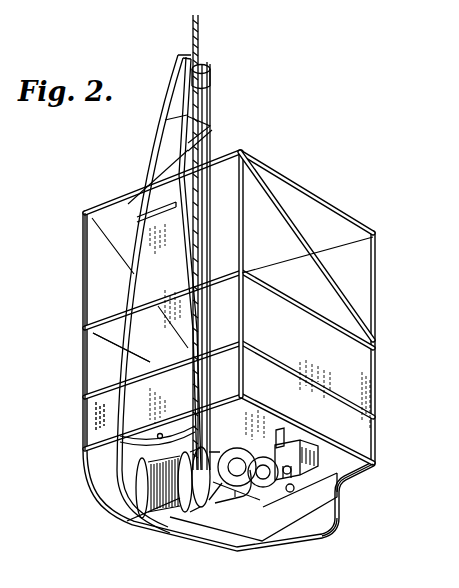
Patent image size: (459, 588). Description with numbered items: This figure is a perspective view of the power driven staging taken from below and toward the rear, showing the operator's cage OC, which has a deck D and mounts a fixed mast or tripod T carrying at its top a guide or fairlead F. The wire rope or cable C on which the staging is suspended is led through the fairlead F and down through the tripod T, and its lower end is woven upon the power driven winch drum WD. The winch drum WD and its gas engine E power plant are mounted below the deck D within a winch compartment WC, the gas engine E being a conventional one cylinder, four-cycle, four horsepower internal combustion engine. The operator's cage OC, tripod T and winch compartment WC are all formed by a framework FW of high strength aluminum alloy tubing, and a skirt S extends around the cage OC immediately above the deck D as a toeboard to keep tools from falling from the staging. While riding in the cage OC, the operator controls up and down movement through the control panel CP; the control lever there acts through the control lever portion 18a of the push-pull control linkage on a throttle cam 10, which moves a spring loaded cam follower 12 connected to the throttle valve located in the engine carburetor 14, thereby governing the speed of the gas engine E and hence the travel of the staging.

The wire rope or cable C is at (198, 41).
The guide or fairlead F is at (208, 63).
The fixed mast or tripod T is at (174, 110).
The control panel CP is at (148, 233).
The framework FW is at (88, 278).
The control lever portion of the control linkage 18a is at (115, 350).
The skirt S is at (90, 417).
The operator's cage OC is at (382, 490).
The throttle cam 10 is at (276, 450).
The spring loaded cam follower 12 is at (279, 440).
The engine carburetor 14 is at (294, 440).
The deck D is at (355, 485).
The gas engine E is at (338, 527).
The winch drum WD is at (171, 520).
The winch compartment WC is at (229, 476).